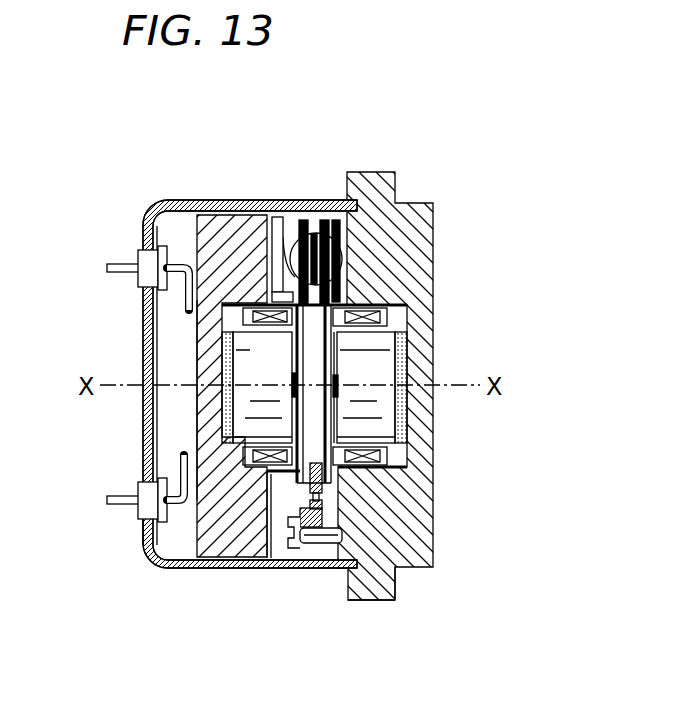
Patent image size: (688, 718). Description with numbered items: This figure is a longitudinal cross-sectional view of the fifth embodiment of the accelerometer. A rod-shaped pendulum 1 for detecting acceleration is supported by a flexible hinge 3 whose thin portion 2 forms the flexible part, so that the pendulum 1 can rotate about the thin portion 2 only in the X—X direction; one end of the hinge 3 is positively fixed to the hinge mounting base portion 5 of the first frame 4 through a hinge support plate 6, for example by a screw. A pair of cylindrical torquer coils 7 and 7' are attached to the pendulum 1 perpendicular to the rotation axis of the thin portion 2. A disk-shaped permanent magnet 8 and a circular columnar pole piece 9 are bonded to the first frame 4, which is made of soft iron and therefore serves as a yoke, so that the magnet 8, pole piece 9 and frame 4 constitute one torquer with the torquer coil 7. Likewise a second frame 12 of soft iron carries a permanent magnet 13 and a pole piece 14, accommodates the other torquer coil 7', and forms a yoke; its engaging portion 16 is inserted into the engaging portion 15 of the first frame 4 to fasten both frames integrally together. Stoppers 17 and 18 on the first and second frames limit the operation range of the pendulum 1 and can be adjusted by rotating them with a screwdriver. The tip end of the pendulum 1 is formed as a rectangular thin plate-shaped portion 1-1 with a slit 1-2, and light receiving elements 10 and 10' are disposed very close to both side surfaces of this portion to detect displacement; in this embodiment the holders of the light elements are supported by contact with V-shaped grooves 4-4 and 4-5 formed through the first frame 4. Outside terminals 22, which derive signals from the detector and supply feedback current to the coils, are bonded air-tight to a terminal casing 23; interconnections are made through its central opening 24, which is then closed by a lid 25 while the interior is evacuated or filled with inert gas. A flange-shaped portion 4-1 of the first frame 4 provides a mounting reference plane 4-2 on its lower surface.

The pendulum 1 is at (340, 352).
The rectangular thin plate-shaped portion 1-1 is at (336, 238).
The slit 1-2 is at (313, 238).
The thin portion 2 is at (302, 497).
The hinge 3 is at (303, 560).
The first frame 4 is at (430, 538).
The flange-shaped portion 4-1 is at (379, 601).
The mounting reference plane 4-2 is at (397, 593).
The V-shaped groove 4-4 is at (401, 281).
The V-shaped groove 4-5 is at (365, 292).
The hinge mounting base portion 5 is at (335, 548).
The hinge support plate 6 is at (296, 550).
The torquer coil 7 is at (416, 309).
The torquer coil 7' is at (188, 308).
The permanent magnet 8 is at (402, 410).
The pole piece 9 is at (395, 438).
The light receiving element 10 is at (396, 253).
The light receiving element 10' is at (279, 197).
The second frame 12 is at (212, 547).
The permanent magnet 13 is at (228, 383).
The pole piece 14 is at (250, 350).
The engaging portion 15 is at (240, 220).
The engaging portion 16 is at (280, 293).
The stopper 17 is at (340, 380).
The stopper 18 is at (197, 400).
The outside terminal 22 is at (107, 266).
The terminal casing 23 is at (172, 202).
The central opening 24 is at (160, 423).
The lid 25 is at (143, 525).